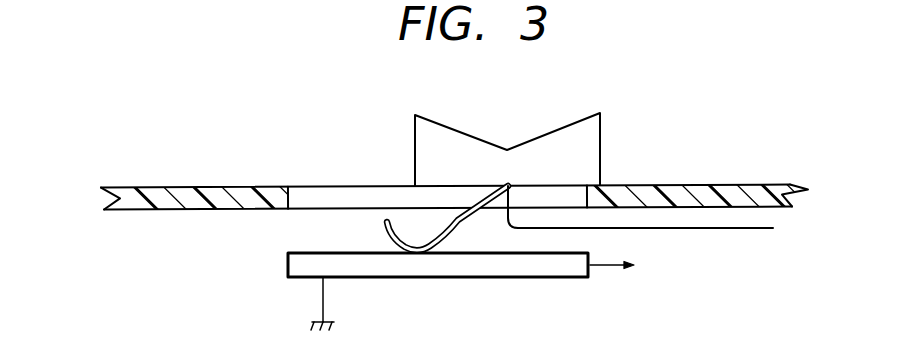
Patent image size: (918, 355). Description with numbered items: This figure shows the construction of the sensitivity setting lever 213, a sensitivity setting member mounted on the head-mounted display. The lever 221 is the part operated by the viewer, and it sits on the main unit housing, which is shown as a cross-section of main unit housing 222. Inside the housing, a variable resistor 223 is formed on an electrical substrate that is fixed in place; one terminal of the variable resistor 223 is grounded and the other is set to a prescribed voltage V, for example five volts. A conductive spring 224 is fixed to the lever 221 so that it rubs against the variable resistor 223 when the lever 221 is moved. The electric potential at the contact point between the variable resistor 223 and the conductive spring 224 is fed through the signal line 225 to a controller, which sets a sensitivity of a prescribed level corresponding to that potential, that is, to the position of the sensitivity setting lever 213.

The sensitivity setting lever 213 is at (665, 112).
The lever 221 is at (452, 130).
The cross-section of main unit housing 222 is at (172, 187).
The variable resistor 223 is at (492, 278).
The conductive spring 224 is at (383, 227).
The signal line 225 is at (717, 229).